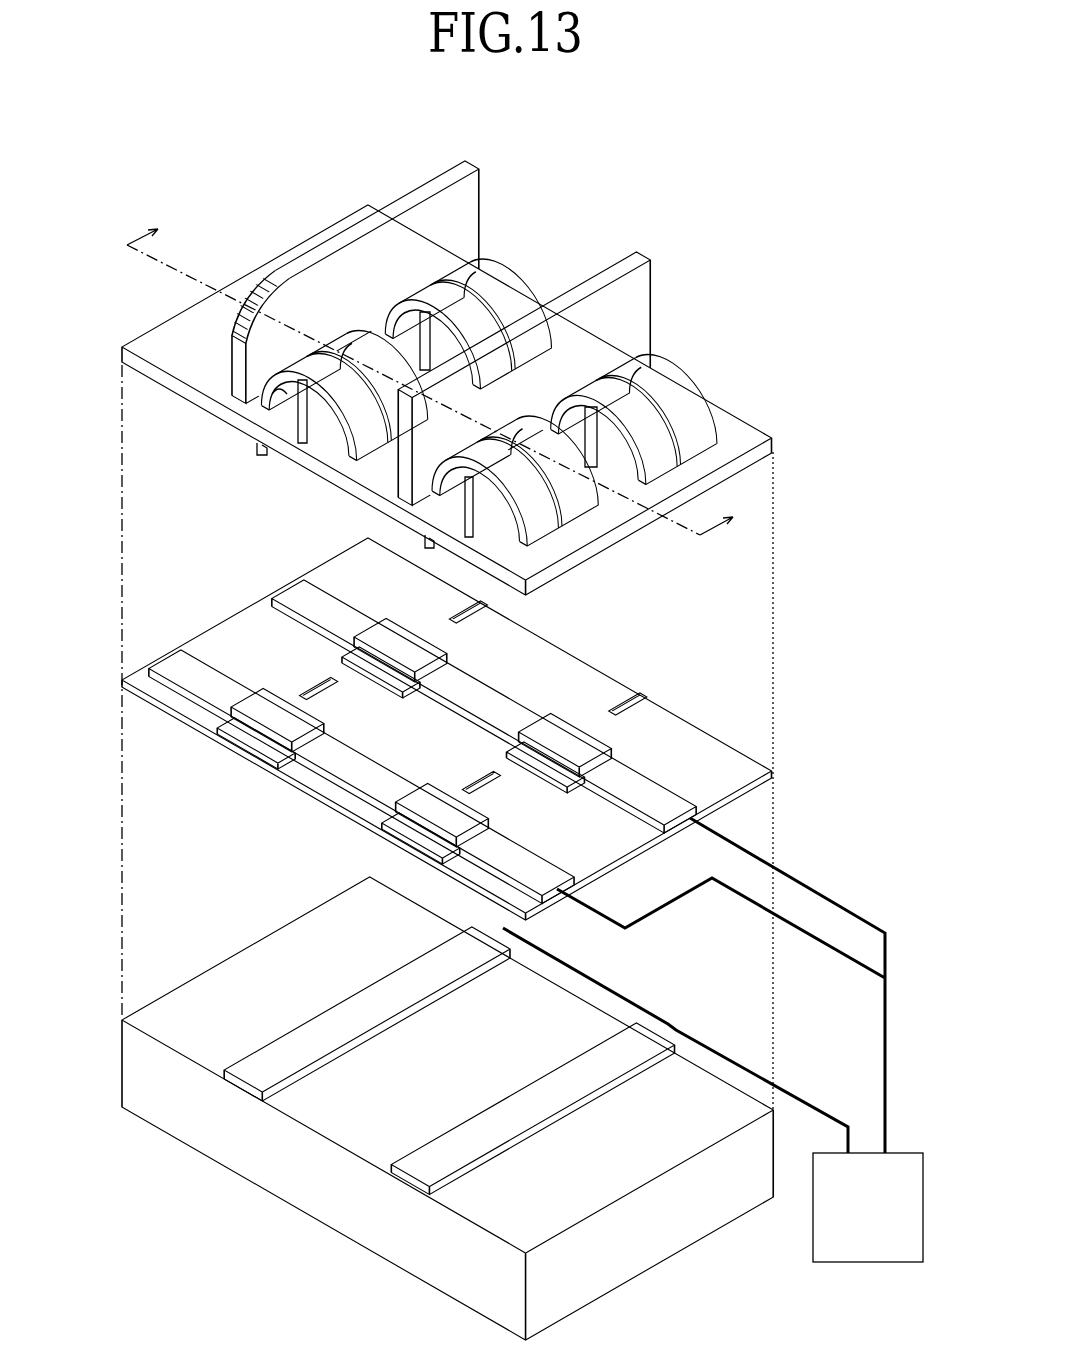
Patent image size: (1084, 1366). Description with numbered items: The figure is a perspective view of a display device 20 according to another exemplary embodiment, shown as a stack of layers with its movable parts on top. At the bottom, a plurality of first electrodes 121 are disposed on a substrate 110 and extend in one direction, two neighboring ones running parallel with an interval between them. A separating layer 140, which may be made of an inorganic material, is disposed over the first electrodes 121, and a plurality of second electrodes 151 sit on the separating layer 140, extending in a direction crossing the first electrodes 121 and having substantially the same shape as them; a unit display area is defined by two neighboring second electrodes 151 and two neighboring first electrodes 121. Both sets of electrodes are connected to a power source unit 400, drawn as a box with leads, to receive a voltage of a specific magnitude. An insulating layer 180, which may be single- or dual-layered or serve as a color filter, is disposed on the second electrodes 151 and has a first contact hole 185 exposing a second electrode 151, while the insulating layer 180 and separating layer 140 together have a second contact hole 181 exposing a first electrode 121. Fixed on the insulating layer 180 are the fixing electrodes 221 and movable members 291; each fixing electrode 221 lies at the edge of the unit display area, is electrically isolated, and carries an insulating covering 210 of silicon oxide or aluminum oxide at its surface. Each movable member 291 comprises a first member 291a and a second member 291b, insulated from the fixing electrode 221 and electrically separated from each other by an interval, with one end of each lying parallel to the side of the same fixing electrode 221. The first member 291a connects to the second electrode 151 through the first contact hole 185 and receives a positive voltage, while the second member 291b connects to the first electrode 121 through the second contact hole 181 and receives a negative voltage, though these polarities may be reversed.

The display device 20 is at (624, 150).
The substrate 110 is at (292, 1176).
The first electrode 121 is at (430, 1172).
The separating layer 140 is at (248, 630).
The second electrode 151 is at (347, 765).
The insulating layer 180 is at (207, 378).
The second contact hole 181 is at (328, 408).
The first contact hole 185 is at (290, 402).
The insulating covering 210 is at (355, 282).
The fixing electrode 221 is at (258, 312).
The movable member 291 is at (514, 399).
The first member 291a is at (632, 403).
The second member 291b is at (680, 388).
The power source unit 400 is at (850, 1264).